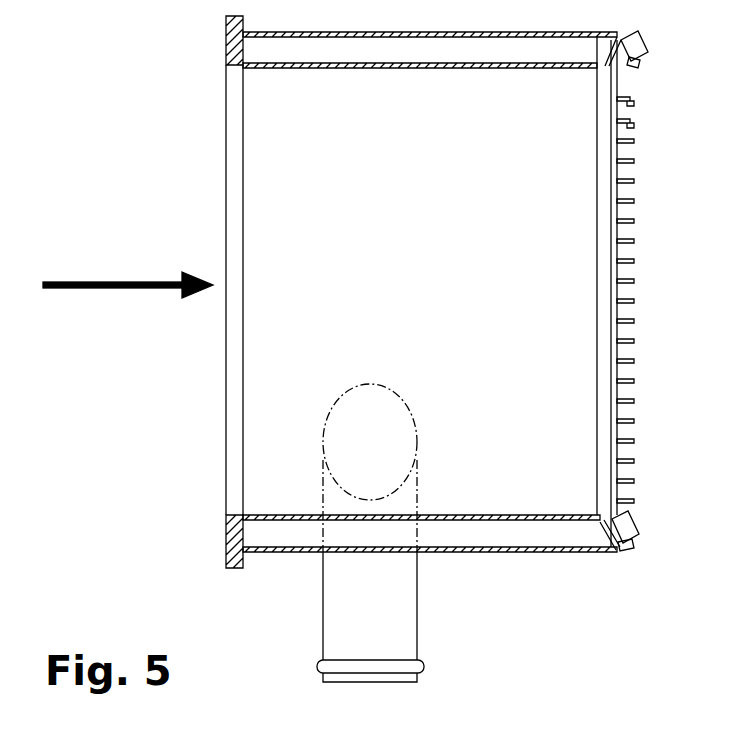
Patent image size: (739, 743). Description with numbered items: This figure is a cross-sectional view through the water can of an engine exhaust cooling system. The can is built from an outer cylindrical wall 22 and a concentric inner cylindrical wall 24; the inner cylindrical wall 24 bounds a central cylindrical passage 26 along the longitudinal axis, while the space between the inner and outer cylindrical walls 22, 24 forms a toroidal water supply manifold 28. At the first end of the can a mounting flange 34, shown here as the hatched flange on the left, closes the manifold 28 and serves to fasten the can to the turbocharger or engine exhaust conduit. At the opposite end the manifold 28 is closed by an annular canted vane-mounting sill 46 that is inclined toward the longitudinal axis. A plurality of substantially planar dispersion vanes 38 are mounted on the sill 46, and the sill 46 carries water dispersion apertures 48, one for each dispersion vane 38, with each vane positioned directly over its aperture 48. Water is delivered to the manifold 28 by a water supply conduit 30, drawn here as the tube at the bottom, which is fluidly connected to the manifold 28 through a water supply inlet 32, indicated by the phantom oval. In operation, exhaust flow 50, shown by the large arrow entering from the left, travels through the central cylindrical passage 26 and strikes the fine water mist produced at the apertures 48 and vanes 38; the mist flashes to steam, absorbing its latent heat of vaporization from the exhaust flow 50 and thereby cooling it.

The outer cylindrical wall 22 is at (468, 553).
The inner cylindrical wall 24 is at (523, 518).
The central cylindrical passage 26 is at (446, 328).
The toroidal water supply manifold 28 is at (502, 537).
The water supply conduit 30 is at (338, 602).
The water supply inlet 32 is at (358, 451).
The mounting flange 34 is at (229, 537).
The dispersion vanes 38 is at (632, 537).
The canted vane-mounting sill 46 is at (607, 520).
The water dispersion apertures 48 is at (625, 513).
The exhaust flow 50 is at (108, 288).